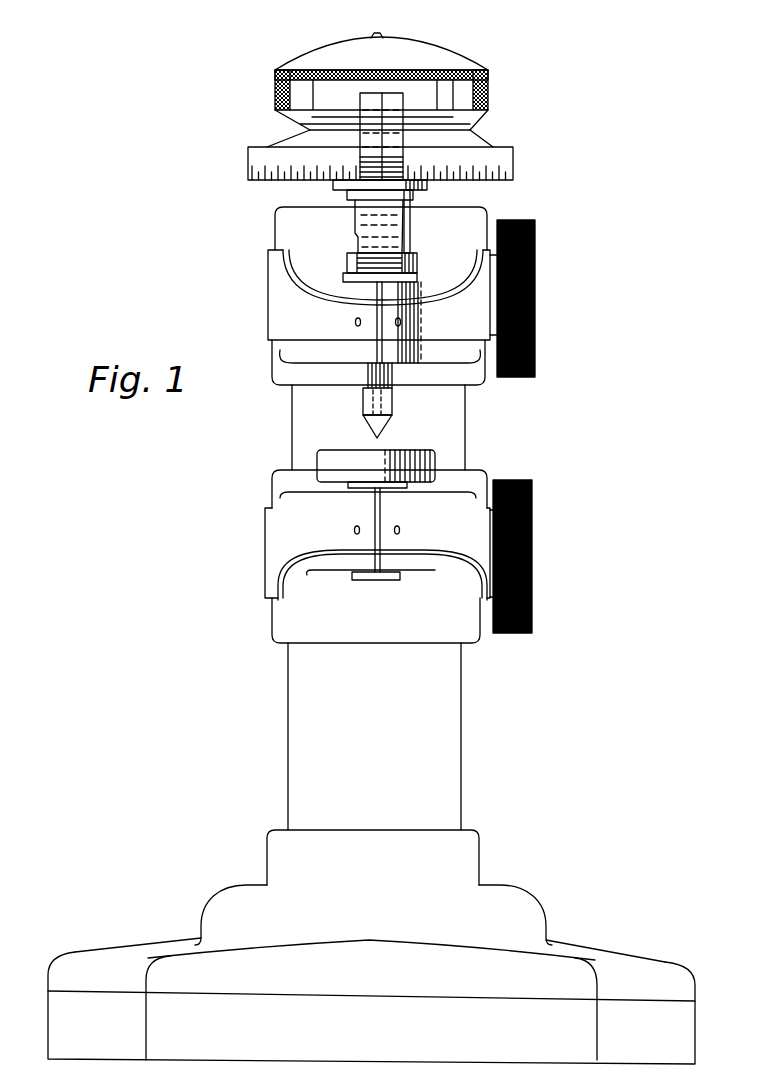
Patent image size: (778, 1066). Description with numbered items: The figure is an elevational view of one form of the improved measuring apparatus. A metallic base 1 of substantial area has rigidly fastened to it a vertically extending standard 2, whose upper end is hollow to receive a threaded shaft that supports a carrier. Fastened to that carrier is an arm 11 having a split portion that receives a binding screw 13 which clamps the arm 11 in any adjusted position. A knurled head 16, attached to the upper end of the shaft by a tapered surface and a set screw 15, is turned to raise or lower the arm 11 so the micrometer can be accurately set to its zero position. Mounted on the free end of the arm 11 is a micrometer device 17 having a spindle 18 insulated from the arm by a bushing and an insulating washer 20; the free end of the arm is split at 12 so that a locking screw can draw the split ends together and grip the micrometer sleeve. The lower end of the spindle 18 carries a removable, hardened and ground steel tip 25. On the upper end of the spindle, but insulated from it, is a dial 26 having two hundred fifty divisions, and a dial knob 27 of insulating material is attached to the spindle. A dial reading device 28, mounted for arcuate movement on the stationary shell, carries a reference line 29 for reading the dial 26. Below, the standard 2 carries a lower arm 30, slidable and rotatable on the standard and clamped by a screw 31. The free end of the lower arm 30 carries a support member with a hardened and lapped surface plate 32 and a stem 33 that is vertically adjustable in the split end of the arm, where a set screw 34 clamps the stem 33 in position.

The metallic base 1 is at (595, 946).
The standard 2 is at (303, 660).
The arm 11 is at (280, 312).
The split 12 is at (380, 305).
The binding screw 13 is at (537, 330).
The set screw 15 is at (383, 37).
The knurled head 16 is at (487, 72).
The micrometer device 17 is at (411, 205).
The spindle 18 is at (380, 373).
The insulating washer 20 is at (415, 280).
The steel tip 25 is at (384, 431).
The dial 26 is at (250, 152).
The dial knob 27 is at (465, 100).
The dial reading device 28 is at (358, 252).
The reference line 29 is at (401, 123).
The lower arm 30 is at (277, 613).
The screw 31 is at (531, 550).
The surface plate 32 is at (333, 460).
The stem 33 is at (378, 579).
The set screw 34 is at (354, 530).